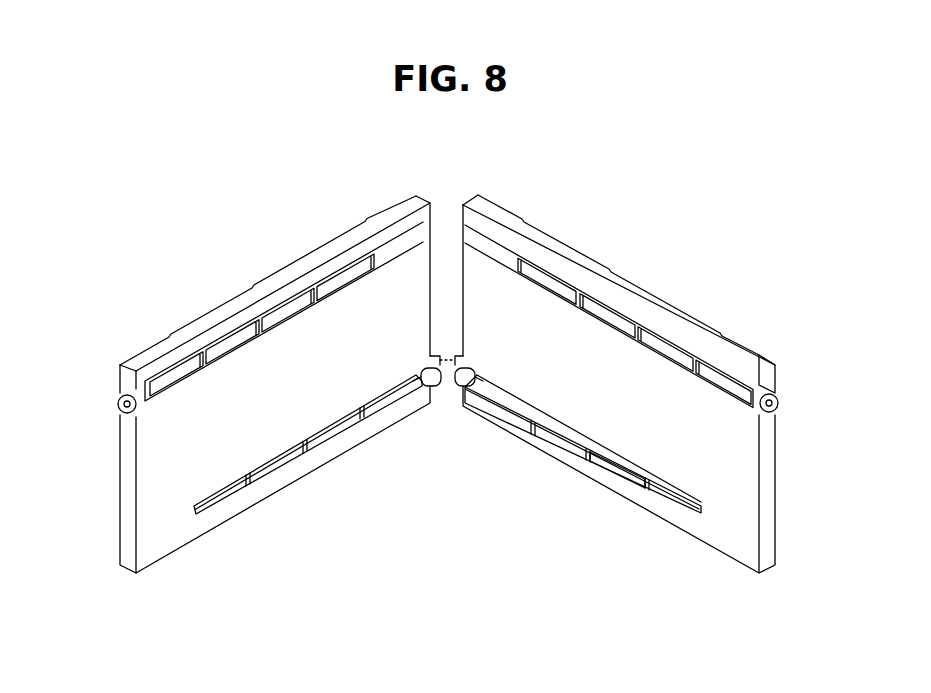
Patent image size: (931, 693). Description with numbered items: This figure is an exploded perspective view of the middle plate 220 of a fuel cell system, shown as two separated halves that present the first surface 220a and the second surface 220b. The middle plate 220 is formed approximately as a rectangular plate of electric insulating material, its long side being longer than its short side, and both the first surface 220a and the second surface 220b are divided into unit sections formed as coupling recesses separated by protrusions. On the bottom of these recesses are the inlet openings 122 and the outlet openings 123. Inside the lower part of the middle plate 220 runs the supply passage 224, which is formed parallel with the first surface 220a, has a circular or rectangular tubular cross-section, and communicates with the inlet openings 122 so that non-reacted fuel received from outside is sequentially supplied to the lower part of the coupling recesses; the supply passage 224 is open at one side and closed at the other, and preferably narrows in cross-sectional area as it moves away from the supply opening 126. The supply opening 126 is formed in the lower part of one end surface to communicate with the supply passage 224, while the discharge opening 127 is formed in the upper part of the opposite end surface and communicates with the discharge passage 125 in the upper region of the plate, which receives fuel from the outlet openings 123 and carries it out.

The middle plate 220 is at (143, 151).
The first surface 220a is at (198, 316).
The second surface 220b is at (758, 351).
The discharge passage 125 is at (286, 312).
The outlet openings 123 is at (692, 350).
The discharge opening 127 is at (117, 391).
The supply opening 126 is at (453, 384).
The supply passage 224 is at (308, 446).
The inlet openings 122 is at (642, 474).